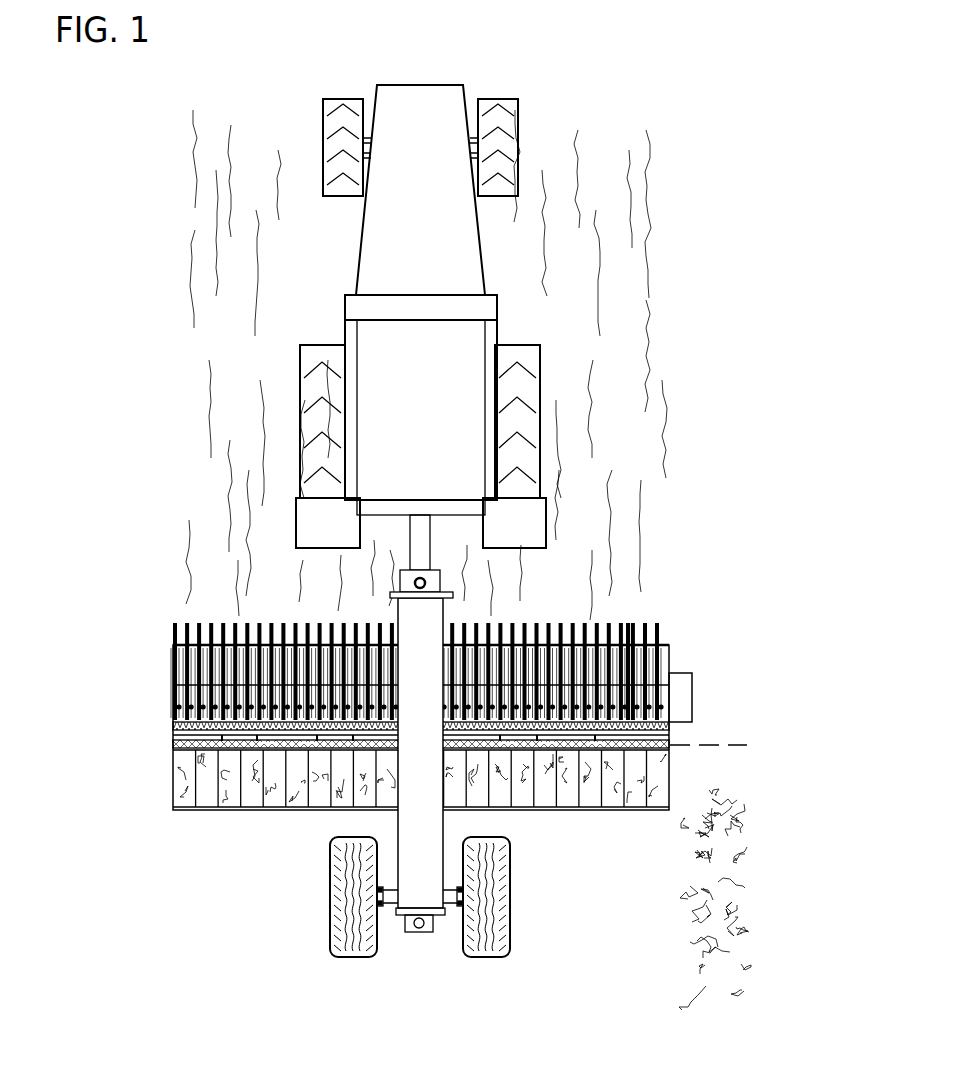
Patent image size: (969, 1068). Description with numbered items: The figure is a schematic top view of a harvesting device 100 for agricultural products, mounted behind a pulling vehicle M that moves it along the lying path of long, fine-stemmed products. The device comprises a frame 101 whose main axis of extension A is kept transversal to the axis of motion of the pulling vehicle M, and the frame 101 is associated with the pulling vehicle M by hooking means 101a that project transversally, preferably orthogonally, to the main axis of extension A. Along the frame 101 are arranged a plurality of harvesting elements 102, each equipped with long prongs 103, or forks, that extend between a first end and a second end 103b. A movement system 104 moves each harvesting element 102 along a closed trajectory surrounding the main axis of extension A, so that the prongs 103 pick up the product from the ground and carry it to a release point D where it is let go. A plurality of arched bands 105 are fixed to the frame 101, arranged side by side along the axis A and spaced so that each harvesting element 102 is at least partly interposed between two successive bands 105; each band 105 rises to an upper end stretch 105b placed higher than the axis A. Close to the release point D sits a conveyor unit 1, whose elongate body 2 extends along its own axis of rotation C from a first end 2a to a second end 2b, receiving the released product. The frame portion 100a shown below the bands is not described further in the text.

The conveyor unit 1 is at (215, 735).
The elongate body 2 is at (434, 750).
The first end 2a is at (669, 727).
The second end 2b is at (173, 733).
The harvesting device 100 is at (434, 691).
The panel shield 100a is at (256, 803).
The frame 101 is at (536, 814).
The hooking means 101a is at (413, 583).
The harvesting element 102 is at (663, 620).
The long prong 103 is at (628, 635).
The second end 103b is at (650, 620).
The movement system 104 is at (686, 692).
The band 105 is at (242, 640).
The upper end stretch 105b is at (215, 705).
The main axis of extension A is at (140, 745).
The axis of rotation C is at (160, 727).
The release point D is at (173, 742).
The pulling vehicle M is at (430, 420).